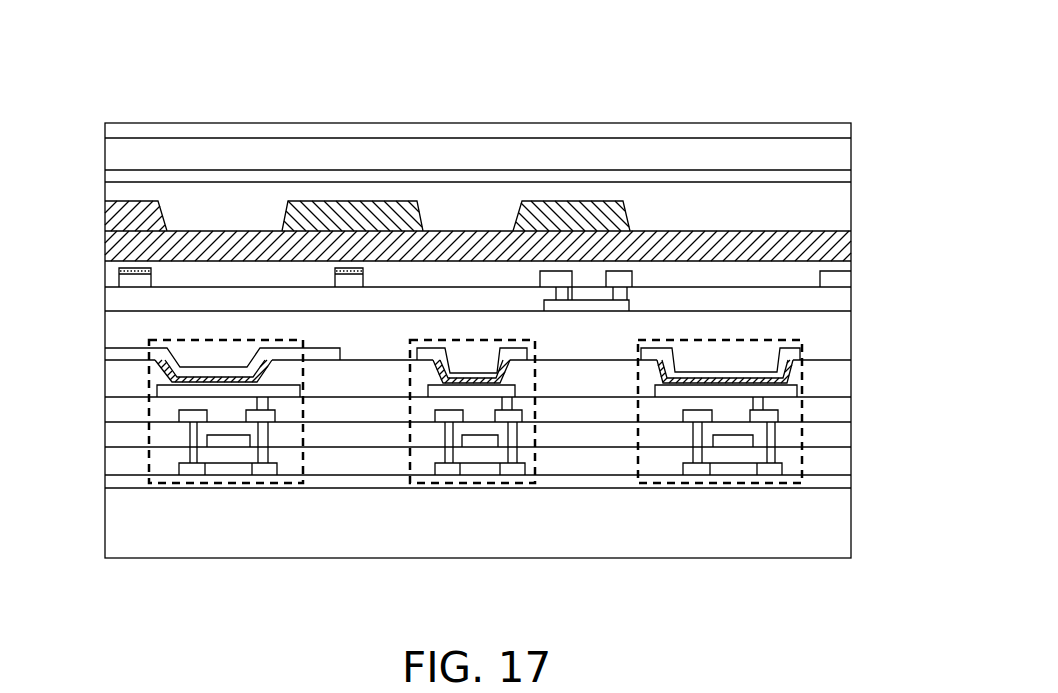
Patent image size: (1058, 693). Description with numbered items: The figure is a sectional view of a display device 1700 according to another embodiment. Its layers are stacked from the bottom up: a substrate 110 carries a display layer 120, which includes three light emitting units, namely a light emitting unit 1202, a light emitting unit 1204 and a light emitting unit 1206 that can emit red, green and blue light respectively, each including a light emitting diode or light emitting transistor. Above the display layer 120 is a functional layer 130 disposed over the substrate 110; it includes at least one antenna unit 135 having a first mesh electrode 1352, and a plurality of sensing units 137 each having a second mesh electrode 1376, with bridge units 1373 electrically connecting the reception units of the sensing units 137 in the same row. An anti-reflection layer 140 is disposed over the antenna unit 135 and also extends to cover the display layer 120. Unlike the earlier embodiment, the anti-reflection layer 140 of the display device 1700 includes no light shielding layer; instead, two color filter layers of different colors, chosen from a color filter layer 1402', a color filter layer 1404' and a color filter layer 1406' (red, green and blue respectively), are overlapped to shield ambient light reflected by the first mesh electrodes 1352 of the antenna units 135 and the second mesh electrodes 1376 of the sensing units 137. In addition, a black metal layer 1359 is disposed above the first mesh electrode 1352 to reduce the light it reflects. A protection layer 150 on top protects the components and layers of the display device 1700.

The display device 1700 is at (793, 72).
The substrate 110 is at (581, 529).
The display layer 120 is at (439, 476).
The light emitting unit 1202 is at (218, 485).
The light emitting unit 1204 is at (480, 485).
The light emitting unit 1206 is at (712, 485).
The functional layer 130 is at (439, 317).
The antenna unit 135 is at (267, 317).
The first mesh electrode 1352 is at (352, 280).
The black metal layer 1359 is at (343, 268).
The sensing unit 137 is at (573, 182).
The bridge unit 1373 is at (545, 307).
The second mesh electrode 1376 is at (620, 277).
The anti-reflection layer 140 is at (439, 160).
The color filter layer 1402' is at (303, 171).
The color filter layer 1404' is at (352, 145).
The color filter layer 1406' is at (667, 172).
The protection layer 150 is at (99, 125).